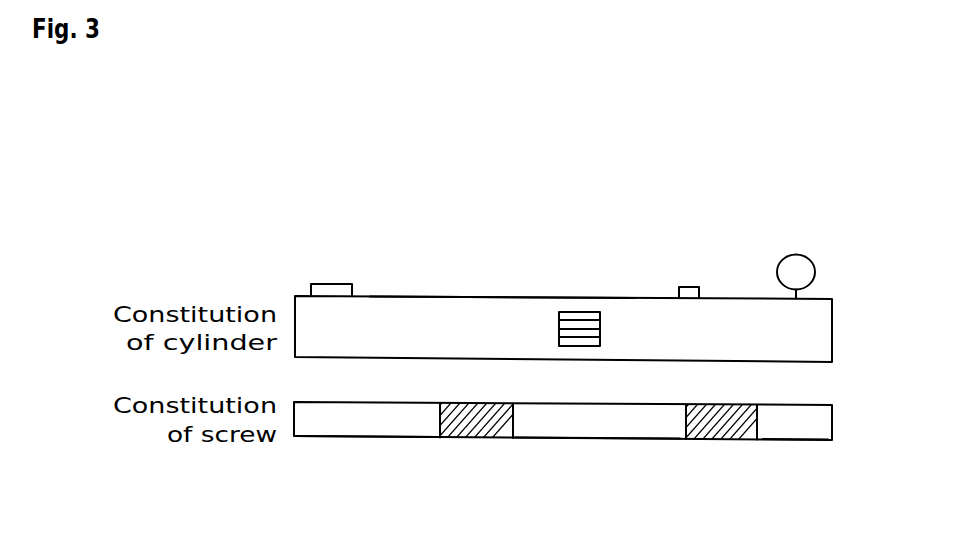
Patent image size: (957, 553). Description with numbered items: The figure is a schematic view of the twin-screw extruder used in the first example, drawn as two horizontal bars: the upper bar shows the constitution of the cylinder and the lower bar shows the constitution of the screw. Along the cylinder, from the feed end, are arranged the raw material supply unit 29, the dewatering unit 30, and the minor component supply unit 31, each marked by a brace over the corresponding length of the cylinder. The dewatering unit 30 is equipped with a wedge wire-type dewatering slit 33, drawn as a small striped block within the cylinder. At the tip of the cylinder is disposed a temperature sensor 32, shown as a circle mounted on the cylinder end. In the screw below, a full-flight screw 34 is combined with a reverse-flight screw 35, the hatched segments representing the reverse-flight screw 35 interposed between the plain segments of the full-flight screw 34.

The raw material supply unit 29 is at (300, 254).
The dewatering unit 30 is at (370, 255).
The minor component supply unit 31 is at (643, 256).
The temperature sensor 32 is at (808, 259).
The wedge wire-type dewatering slit 33 is at (580, 346).
The full-flight screw 34 is at (436, 457).
The reverse-flight screw 35 is at (442, 457).